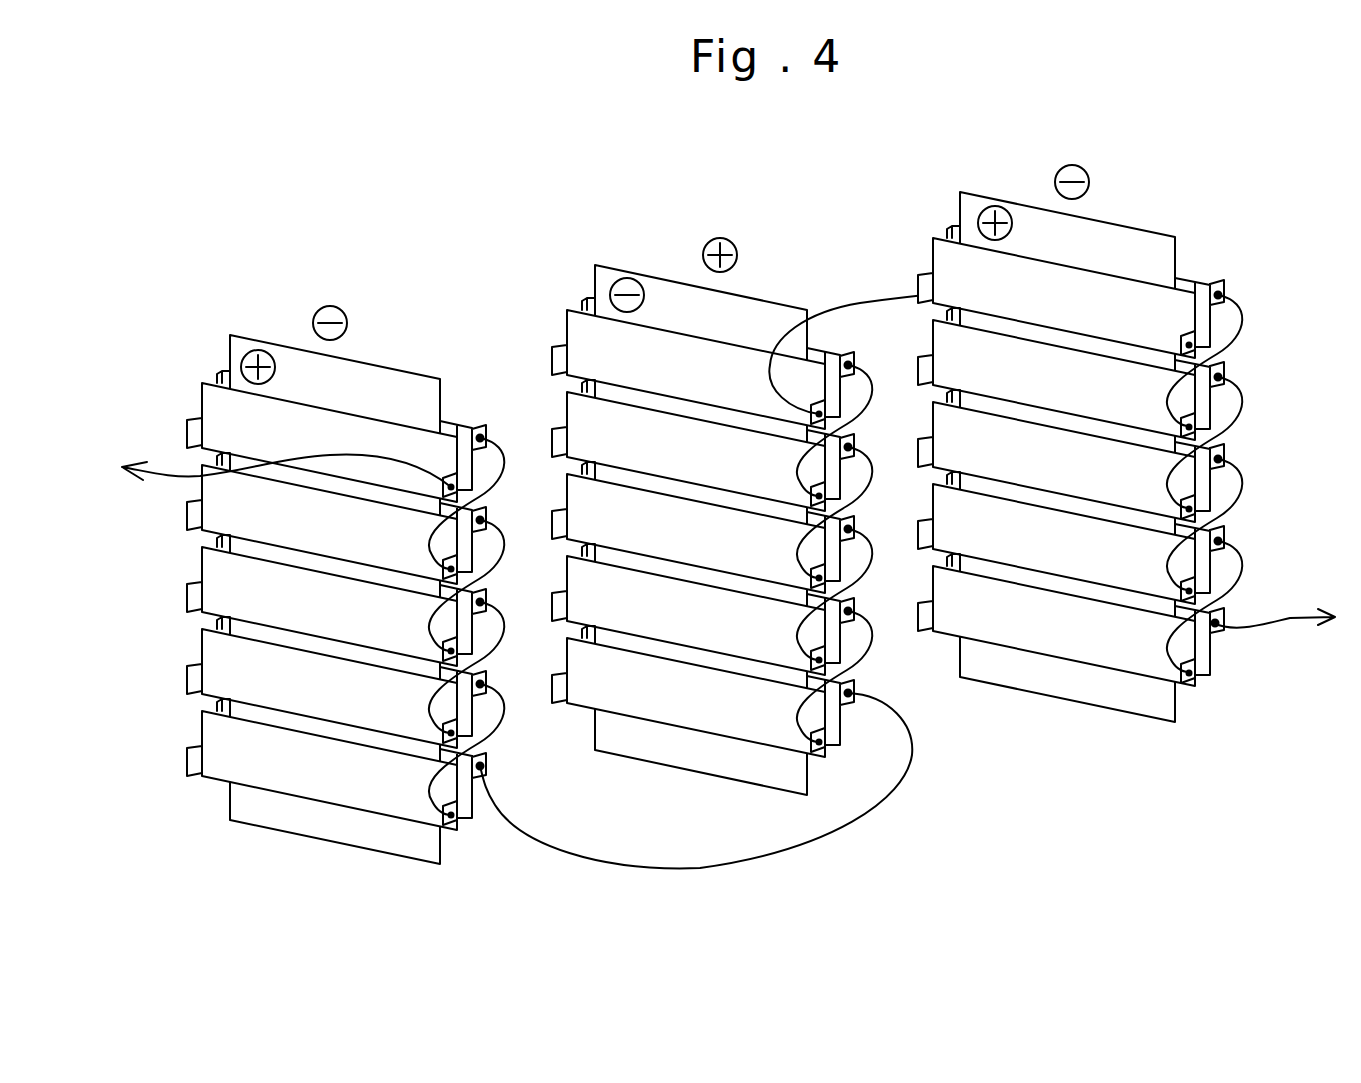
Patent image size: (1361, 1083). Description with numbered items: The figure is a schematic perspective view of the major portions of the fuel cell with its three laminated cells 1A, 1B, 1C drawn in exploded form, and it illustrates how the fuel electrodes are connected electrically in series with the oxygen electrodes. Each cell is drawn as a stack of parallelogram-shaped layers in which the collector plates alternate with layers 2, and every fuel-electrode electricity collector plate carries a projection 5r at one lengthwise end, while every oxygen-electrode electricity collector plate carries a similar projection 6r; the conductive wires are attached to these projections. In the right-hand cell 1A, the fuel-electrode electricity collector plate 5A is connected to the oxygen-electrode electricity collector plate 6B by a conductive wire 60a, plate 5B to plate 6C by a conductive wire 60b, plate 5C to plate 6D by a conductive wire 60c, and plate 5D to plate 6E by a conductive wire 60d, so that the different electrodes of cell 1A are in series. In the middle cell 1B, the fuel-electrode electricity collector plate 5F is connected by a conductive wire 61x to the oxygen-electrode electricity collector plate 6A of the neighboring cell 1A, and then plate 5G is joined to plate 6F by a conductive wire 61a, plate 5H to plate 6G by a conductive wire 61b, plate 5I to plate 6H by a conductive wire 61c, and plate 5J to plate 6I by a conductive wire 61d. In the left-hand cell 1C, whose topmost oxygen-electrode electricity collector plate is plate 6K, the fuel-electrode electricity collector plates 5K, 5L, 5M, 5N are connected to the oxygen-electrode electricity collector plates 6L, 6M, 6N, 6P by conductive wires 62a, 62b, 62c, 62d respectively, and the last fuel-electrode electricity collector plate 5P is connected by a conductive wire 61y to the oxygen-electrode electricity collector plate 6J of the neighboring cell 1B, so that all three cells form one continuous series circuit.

The cell 1A is at (1045, 175).
The cell 1B is at (678, 245).
The cell 1C is at (278, 317).
The electrolyte layer 2 is at (340, 372).
The fuel-electrode electricity collector plate 5A is at (1195, 280).
The fuel-electrode electricity collector plate 5B is at (1225, 367).
The fuel-electrode electricity collector plate 5C is at (1225, 448).
The fuel-electrode electricity collector plate 5D is at (1225, 530).
The fuel-electrode electricity collector plate 5F is at (580, 337).
The fuel-electrode electricity collector plate 5G is at (672, 438).
The fuel-electrode electricity collector plate 5H is at (600, 505).
The fuel-electrode electricity collector plate 5I is at (638, 622).
The fuel-electrode electricity collector plate 5J is at (673, 710).
The fuel-electrode electricity collector plate 5K is at (487, 432).
The fuel-electrode electricity collector plate 5L is at (487, 513).
The fuel-electrode electricity collector plate 5M is at (487, 597).
The fuel-electrode electricity collector plate 5N is at (487, 679).
The fuel-electrode electricity collector plate 5P is at (487, 761).
The projection 5r is at (473, 430).
The oxygen-electrode electricity collector plate 6A is at (945, 267).
The oxygen-electrode electricity collector plate 6B is at (1060, 370).
The oxygen-electrode electricity collector plate 6C is at (1005, 433).
The oxygen-electrode electricity collector plate 6D is at (998, 548).
The oxygen-electrode electricity collector plate 6E is at (1037, 633).
The oxygen-electrode electricity collector plate 6F is at (855, 360).
The oxygen-electrode electricity collector plate 6G is at (855, 442).
The oxygen-electrode electricity collector plate 6H is at (855, 522).
The oxygen-electrode electricity collector plate 6I is at (855, 604).
The oxygen-electrode electricity collector plate 6J is at (850, 680).
The oxygen-electrode electricity collector plate 6K is at (215, 410).
The oxygen-electrode electricity collector plate 6L is at (220, 490).
The oxygen-electrode electricity collector plate 6M is at (225, 567).
The oxygen-electrode electricity collector plate 6N is at (220, 650).
The oxygen-electrode electricity collector plate 6P is at (218, 732).
The projection 6r is at (447, 490).
The conductive wire 60a is at (1243, 325).
The conductive wire 60b is at (1177, 470).
The conductive wire 60c is at (1177, 553).
The conductive wire 60d is at (1167, 632).
The conductive wire 61a is at (807, 459).
The conductive wire 61b is at (807, 542).
The conductive wire 61c is at (805, 620).
The conductive wire 61d is at (805, 700).
The conductive wire 61x is at (873, 302).
The conductive wire 61y is at (837, 837).
The conductive wire 62a is at (430, 543).
The conductive wire 62b is at (430, 620).
The conductive wire 62c is at (430, 695).
The conductive wire 62d is at (430, 775).